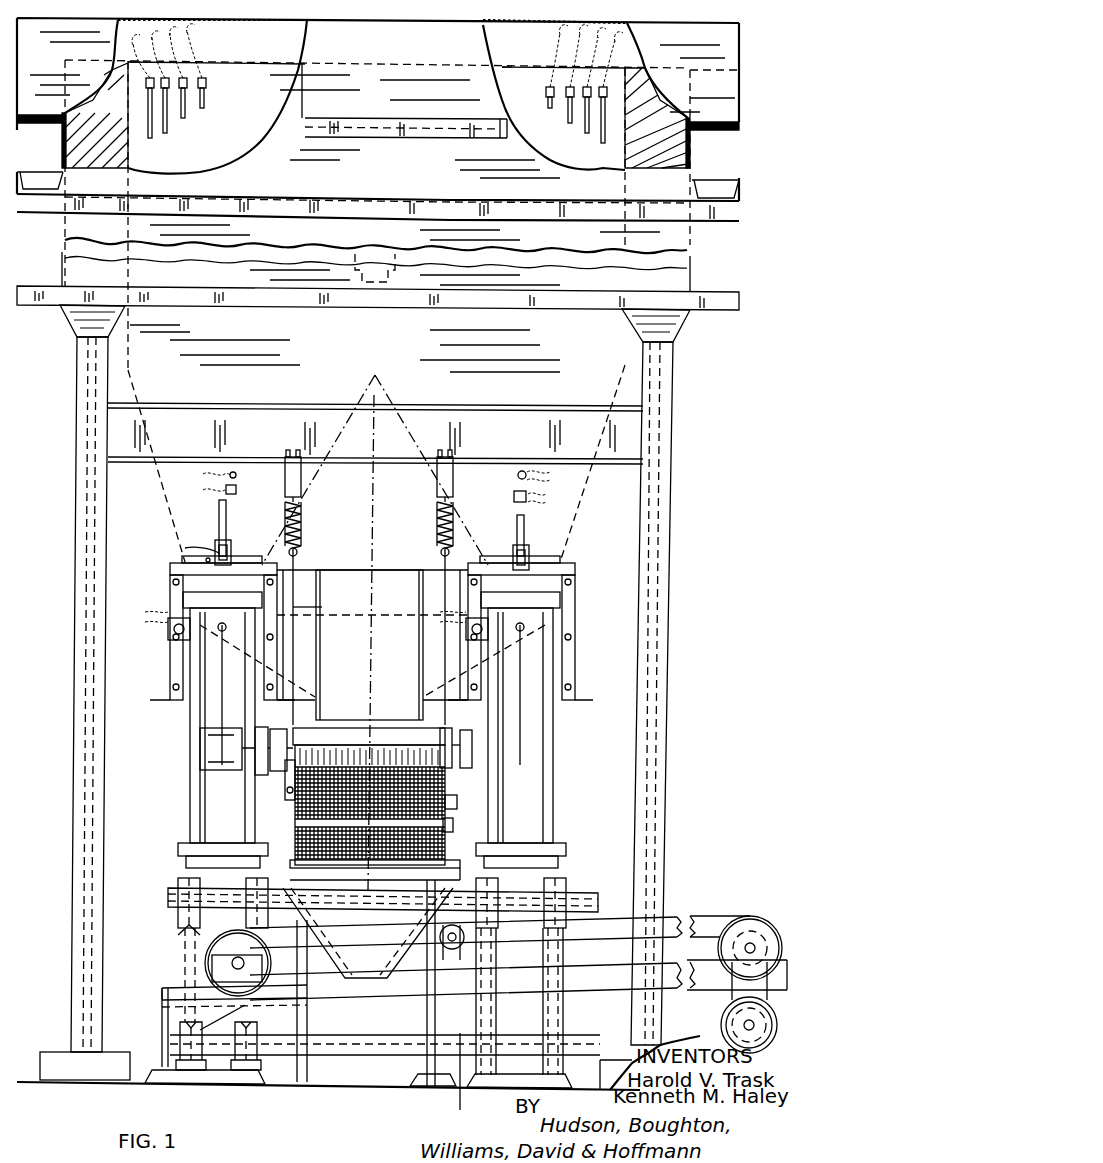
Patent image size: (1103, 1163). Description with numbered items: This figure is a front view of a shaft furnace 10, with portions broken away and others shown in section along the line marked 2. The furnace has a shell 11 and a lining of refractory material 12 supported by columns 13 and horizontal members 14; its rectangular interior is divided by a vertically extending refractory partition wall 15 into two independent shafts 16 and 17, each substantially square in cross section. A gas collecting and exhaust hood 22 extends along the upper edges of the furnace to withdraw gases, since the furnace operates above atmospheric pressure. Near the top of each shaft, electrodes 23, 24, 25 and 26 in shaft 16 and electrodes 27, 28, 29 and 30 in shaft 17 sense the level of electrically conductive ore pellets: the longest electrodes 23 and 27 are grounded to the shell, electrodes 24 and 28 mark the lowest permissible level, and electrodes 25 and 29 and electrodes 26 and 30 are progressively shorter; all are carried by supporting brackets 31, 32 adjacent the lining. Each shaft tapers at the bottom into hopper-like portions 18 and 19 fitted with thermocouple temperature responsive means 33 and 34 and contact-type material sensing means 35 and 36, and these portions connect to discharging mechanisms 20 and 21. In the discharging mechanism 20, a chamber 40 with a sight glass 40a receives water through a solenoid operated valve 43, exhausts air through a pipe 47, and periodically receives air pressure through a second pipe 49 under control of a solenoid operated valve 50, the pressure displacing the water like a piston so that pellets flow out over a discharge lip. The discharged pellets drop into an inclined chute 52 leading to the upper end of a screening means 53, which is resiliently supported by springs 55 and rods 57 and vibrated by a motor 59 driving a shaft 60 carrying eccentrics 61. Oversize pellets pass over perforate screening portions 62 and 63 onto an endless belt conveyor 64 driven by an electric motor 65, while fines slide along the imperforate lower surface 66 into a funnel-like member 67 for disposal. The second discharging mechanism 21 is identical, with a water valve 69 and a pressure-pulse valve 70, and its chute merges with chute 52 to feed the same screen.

The section line 2- 2 is at (368, 395).
The shaft furnace 10 is at (72, 342).
The shell 11 is at (63, 150).
The lining of refractory material 12 is at (690, 150).
The columns 13 is at (670, 609).
The horizontal members 14 is at (707, 310).
The partition wall 15 is at (385, 186).
The shaft 16 is at (272, 73).
The shaft 17 is at (520, 73).
The hopper-like portion 18 is at (165, 503).
The hopper-like portion 19 is at (585, 501).
The discharging mechanism 20 is at (172, 707).
The discharging mechanism 21 is at (570, 713).
The gas collecting and exhaust hood 22 is at (739, 73).
The electrode 23 is at (150, 140).
The electrode 24 is at (168, 132).
The electrode 25 is at (185, 118).
The electrode 26 is at (205, 101).
The electrode 27 is at (606, 143).
The electrode 28 is at (587, 133).
The electrode 29 is at (568, 118).
The electrode 30 is at (549, 101).
The supporting bracket 31 is at (208, 81).
The supporting bracket 32 is at (548, 91).
The temperature responsive means 33 is at (237, 477).
The temperature responsive means 34 is at (517, 477).
The material sensing means 35 is at (237, 493).
The material sensing means 36 is at (513, 497).
The chamber 40 is at (222, 705).
The sight glass 40a is at (222, 660).
The solenoid operated valve 43 is at (168, 631).
The pipe 47 is at (227, 525).
The second pipe 49 is at (185, 548).
The solenoid operated valve 50 is at (231, 555).
The inclined chute 52 is at (398, 581).
The screening means 53 is at (290, 800).
The spring 55 is at (302, 522).
The rod 57 is at (322, 607).
The motor 59 is at (205, 751).
The shaft 60 is at (340, 745).
The eccentrics 61 is at (280, 727).
The perforate screening portion 62 is at (452, 801).
The perforate screening portion 63 is at (448, 826).
The conveyor 64 is at (605, 933).
The electric motor 65 is at (721, 1025).
The imperforate lower surface 66 is at (428, 873).
The funnel-like member 67 is at (300, 900).
The solenoid-operated valve 69 is at (467, 618).
The solenoid-operated valve 70 is at (513, 561).